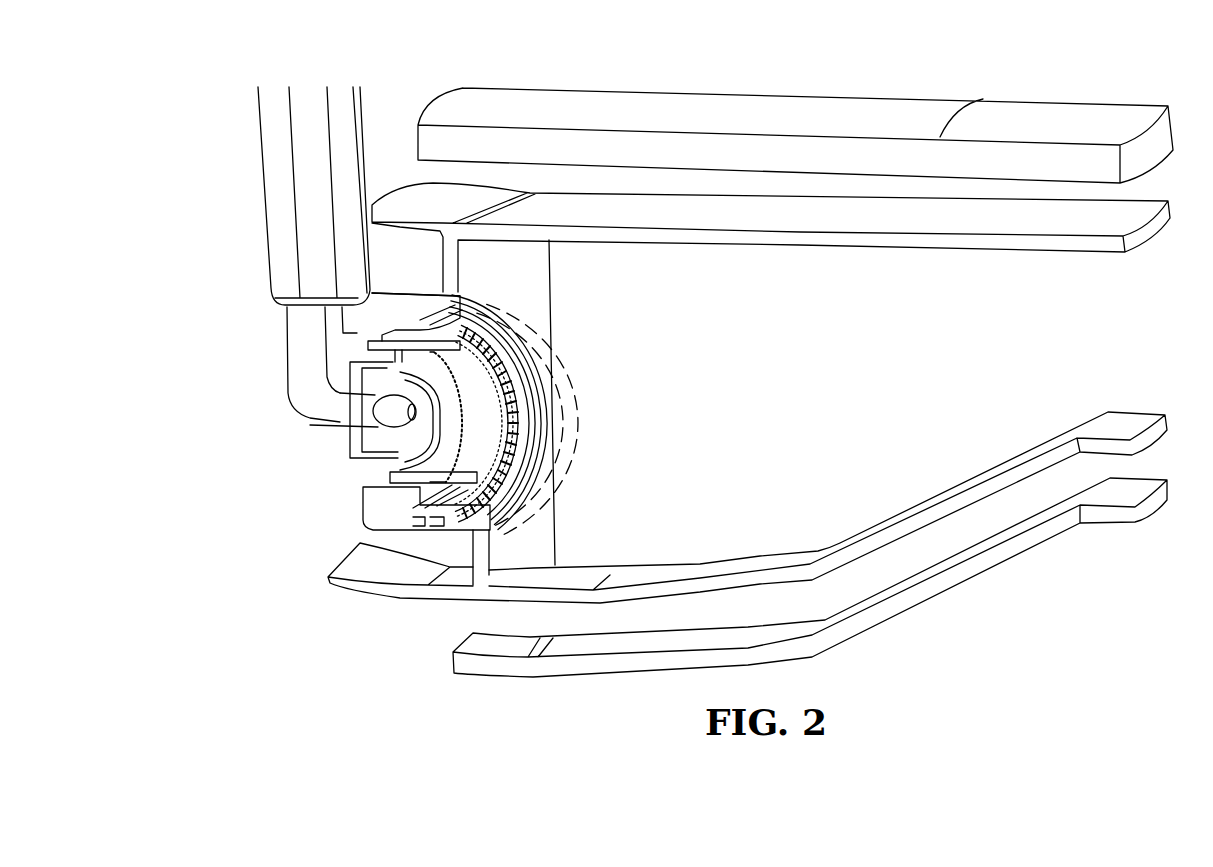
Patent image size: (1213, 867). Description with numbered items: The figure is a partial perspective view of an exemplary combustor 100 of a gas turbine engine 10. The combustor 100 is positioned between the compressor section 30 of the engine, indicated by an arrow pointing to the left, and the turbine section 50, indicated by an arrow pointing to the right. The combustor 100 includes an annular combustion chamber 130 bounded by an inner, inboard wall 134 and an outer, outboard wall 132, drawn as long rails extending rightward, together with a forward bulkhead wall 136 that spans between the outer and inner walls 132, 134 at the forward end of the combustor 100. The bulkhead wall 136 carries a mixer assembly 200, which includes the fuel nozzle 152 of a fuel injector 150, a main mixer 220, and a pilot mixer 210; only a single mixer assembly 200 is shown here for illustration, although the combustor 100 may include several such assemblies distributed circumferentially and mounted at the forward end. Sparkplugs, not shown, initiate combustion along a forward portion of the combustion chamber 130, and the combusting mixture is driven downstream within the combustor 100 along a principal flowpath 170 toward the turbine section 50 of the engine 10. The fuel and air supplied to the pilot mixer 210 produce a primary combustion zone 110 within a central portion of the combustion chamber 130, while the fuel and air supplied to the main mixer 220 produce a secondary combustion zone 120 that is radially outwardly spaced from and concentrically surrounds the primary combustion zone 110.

The gas turbine engine 10 is at (771, 110).
The compressor section 30 is at (293, 423).
The turbine section 50 is at (1112, 353).
The combustor 100 is at (690, 206).
The primary combustion zone 110 is at (557, 397).
The secondary combustion zone 120 is at (565, 477).
The annular combustion chamber 130 is at (842, 376).
The outer wall 132 is at (775, 237).
The inner wall 134 is at (745, 560).
The forward bulkhead wall 136 is at (527, 268).
The fuel injector 150 is at (280, 127).
The fuel nozzle 152 is at (343, 412).
The principal flowpath 170 is at (918, 423).
The mixer assembly 200 is at (536, 332).
The pilot mixer 210 is at (470, 423).
The main mixer 220 is at (490, 498).